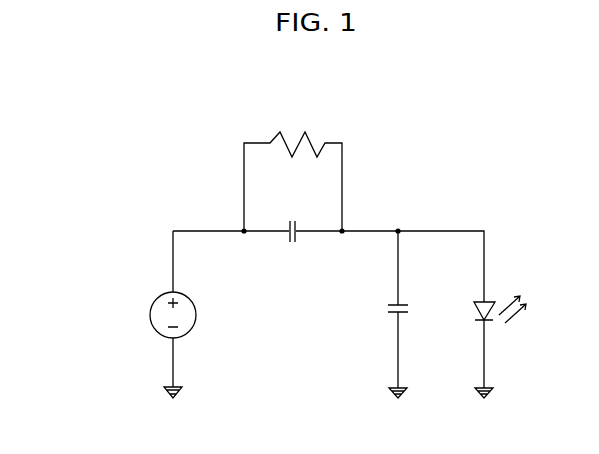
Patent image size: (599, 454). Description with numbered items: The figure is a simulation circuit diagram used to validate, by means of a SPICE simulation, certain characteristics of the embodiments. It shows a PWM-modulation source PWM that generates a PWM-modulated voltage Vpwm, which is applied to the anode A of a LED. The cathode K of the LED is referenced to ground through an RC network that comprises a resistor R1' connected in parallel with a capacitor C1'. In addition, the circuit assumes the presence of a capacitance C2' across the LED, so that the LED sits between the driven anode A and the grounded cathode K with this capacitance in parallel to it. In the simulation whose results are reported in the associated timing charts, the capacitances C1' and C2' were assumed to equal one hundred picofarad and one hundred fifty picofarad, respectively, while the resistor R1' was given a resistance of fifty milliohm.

The resistor R1' is at (293, 155).
The capacitor C1' is at (295, 209).
The capacitance across the LED C2' is at (369, 314).
The PWM-modulation source PWM is at (150, 311).
The PWM-modulated voltage Vpwm is at (228, 293).
The element LED is at (424, 201).
The anode A is at (467, 290).
The cathode K is at (466, 340).